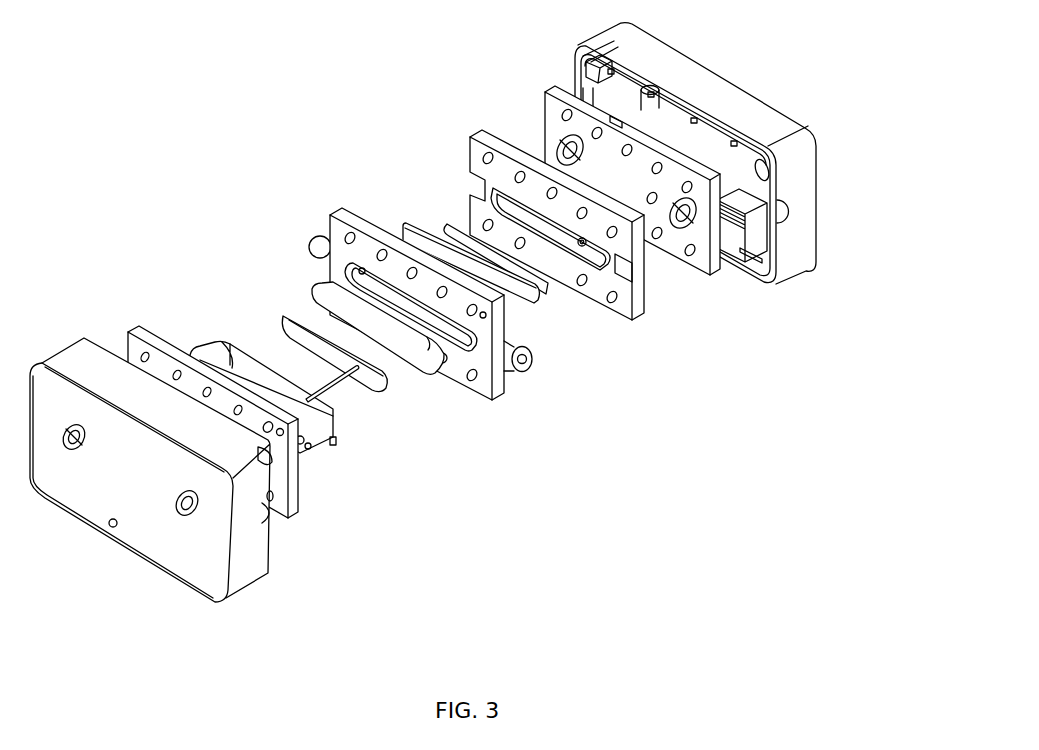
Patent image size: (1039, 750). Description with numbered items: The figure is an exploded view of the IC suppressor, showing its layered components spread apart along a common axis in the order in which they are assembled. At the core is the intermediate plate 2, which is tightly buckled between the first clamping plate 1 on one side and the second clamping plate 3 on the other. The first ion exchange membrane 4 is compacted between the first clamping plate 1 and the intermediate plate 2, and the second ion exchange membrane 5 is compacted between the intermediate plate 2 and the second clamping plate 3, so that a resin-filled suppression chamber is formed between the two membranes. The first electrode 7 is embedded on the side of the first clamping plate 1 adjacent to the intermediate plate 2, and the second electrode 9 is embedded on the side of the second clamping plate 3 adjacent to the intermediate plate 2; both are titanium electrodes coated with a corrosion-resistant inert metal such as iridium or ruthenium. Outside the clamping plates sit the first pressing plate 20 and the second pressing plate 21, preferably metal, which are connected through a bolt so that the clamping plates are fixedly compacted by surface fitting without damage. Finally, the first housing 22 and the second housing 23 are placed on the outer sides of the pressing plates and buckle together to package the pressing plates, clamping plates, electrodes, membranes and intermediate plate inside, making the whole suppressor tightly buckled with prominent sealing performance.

The first clamping plate 1 is at (344, 432).
The intermediate plate 2 is at (514, 395).
The second clamping plate 3 is at (651, 315).
The first ion exchange membrane 4 is at (318, 288).
The second ion exchange membrane 5 is at (398, 226).
The first electrode 7 is at (267, 322).
The second electrode 9 is at (446, 224).
The first pressing plate 20 is at (306, 508).
The second pressing plate 21 is at (723, 278).
The first housing 22 is at (246, 568).
The second housing 23 is at (811, 245).